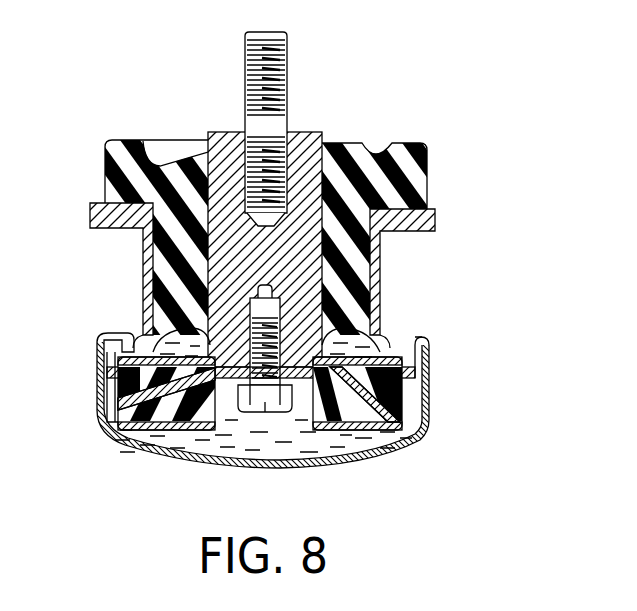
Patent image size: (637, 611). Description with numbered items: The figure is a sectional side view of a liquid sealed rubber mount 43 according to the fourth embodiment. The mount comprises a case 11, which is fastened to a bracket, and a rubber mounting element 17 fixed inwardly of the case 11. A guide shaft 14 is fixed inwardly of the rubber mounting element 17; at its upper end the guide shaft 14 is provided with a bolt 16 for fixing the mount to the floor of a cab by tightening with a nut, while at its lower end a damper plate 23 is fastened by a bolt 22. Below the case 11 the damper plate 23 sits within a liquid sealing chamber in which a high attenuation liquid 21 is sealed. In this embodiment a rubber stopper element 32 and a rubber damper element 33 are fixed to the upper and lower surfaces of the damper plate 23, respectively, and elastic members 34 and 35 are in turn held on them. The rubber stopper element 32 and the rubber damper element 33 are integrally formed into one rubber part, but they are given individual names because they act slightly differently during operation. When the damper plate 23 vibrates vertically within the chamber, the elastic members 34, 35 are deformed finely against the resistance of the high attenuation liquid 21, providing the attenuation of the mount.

The liquid sealed rubber mount 43 is at (463, 122).
The case 11 is at (377, 280).
The guide shaft 14 is at (300, 143).
The bolt 16 is at (243, 70).
The rubber mounting element 17 is at (416, 160).
The high attenuation liquid 21 is at (183, 445).
The bolt 22 is at (263, 407).
The damper plate 23 is at (118, 400).
The rubber stopper element 32 is at (403, 385).
The rubber damper element 33 is at (310, 425).
The elastic member 34 is at (428, 363).
The elastic member 35 is at (393, 433).